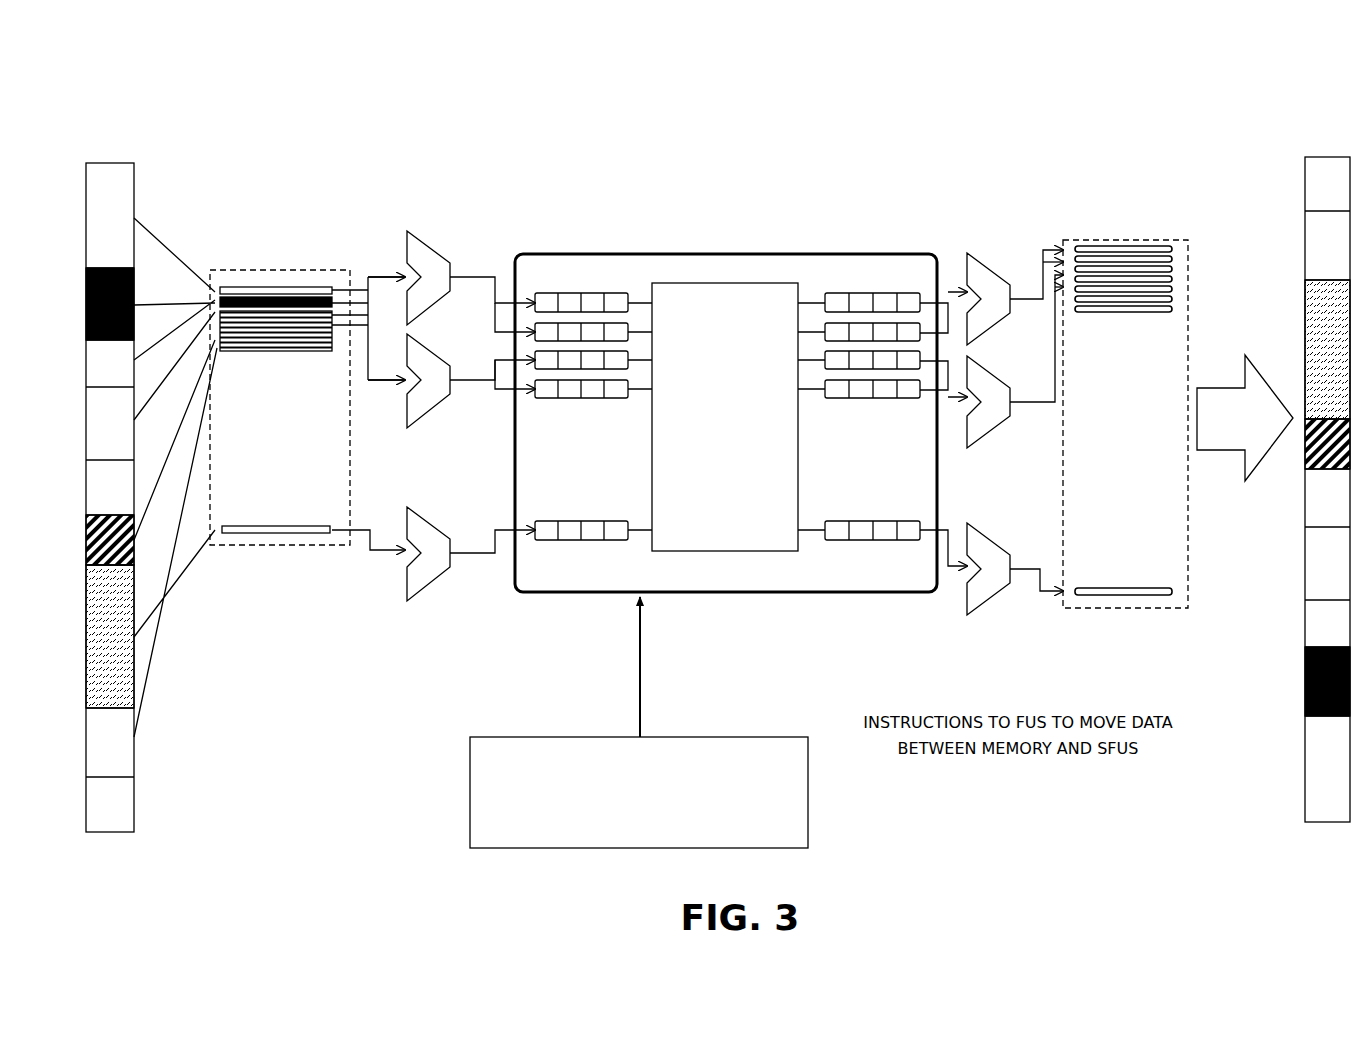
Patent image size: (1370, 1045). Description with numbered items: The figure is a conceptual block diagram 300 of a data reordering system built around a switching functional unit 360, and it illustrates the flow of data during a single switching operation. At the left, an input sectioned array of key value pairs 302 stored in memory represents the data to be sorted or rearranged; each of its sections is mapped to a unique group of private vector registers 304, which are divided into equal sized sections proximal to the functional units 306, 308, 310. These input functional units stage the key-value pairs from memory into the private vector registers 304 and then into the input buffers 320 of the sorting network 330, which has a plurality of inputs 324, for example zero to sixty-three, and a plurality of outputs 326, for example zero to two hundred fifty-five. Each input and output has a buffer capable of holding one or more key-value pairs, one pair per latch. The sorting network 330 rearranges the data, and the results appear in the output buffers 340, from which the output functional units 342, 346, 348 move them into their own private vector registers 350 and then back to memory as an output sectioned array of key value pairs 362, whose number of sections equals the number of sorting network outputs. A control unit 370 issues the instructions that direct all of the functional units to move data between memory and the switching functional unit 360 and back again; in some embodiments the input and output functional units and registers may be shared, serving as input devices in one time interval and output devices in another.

The conceptual block diagram 300 is at (183, 57).
The input sectioned array of key value pairs 302 is at (122, 163).
The private vector registers 304 is at (262, 270).
The functional unit 306 is at (445, 262).
The functional unit 308 is at (428, 410).
The functional unit 310 is at (428, 582).
The input buffers 320 is at (577, 268).
The sorting network inputs 324 is at (643, 268).
The sorting network outputs 326 is at (816, 268).
The sorting network 330 is at (725, 417).
The output buffers 340 is at (865, 268).
The functional unit 342 is at (968, 272).
The functional unit 346 is at (980, 432).
The functional unit 348 is at (975, 614).
The private vector registers 350 is at (1126, 240).
The switching functional unit 360 is at (802, 568).
The output sectioned array of key value pairs 362 is at (1305, 160).
The control unit 370 is at (639, 722).